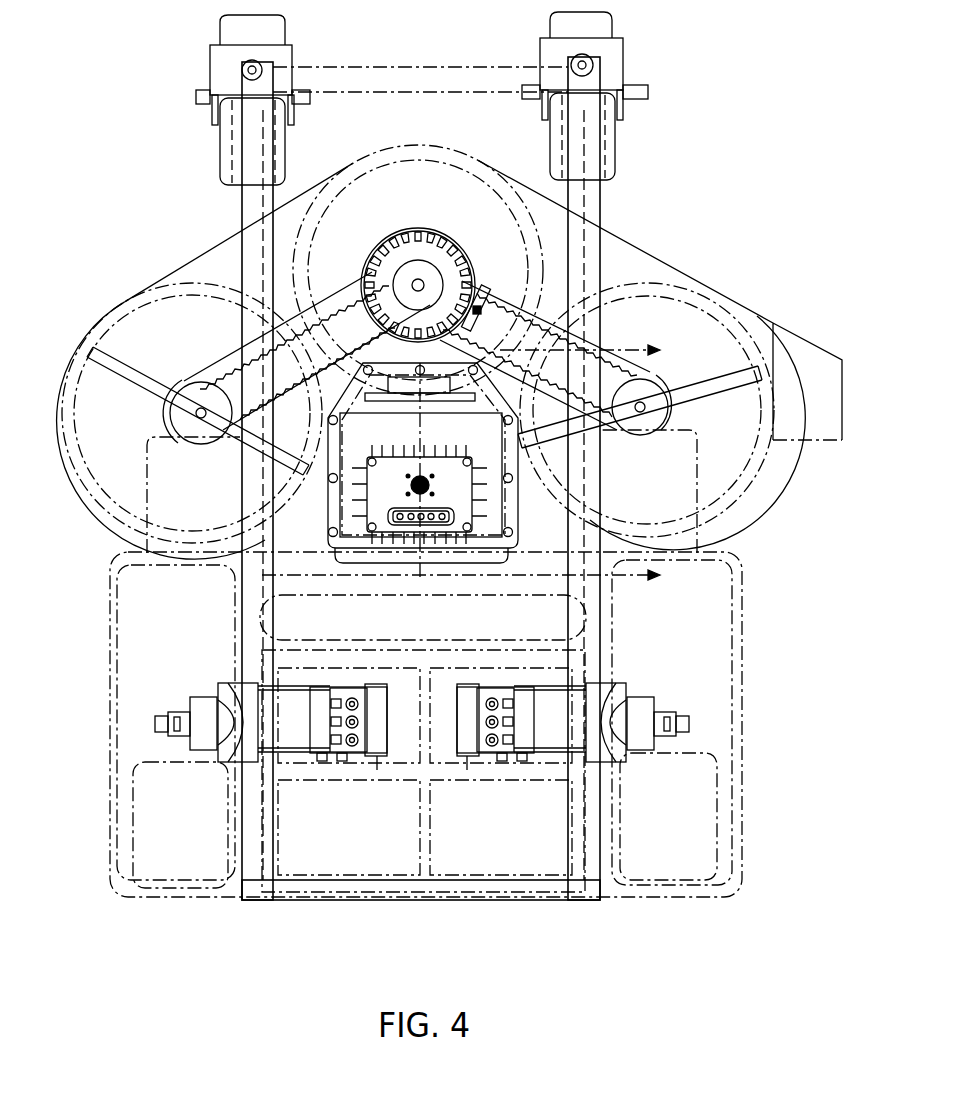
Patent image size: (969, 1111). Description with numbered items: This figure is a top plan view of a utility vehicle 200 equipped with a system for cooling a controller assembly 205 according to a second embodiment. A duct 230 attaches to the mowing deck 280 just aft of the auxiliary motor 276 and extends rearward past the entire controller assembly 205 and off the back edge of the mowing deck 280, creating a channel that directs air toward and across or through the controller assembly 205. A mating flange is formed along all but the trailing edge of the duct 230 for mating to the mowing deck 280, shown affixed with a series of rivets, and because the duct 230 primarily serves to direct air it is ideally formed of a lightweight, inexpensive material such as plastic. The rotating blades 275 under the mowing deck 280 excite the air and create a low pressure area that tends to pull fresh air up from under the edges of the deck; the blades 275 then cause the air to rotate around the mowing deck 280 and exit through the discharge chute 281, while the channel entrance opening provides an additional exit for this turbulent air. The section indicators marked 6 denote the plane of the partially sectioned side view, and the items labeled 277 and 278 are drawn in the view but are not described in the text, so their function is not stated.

The utility vehicle 200 is at (150, 92).
The controller assembly 205 is at (368, 490).
The duct 230 is at (506, 480).
The rotating blades 275 is at (345, 215).
The auxiliary motor 276 is at (447, 256).
The valve assembly 277 is at (348, 685).
The idler pulley 278 is at (488, 296).
The mowing deck 280 is at (196, 258).
The discharge chute 281 is at (829, 355).
The section line 6 is at (475, 464).